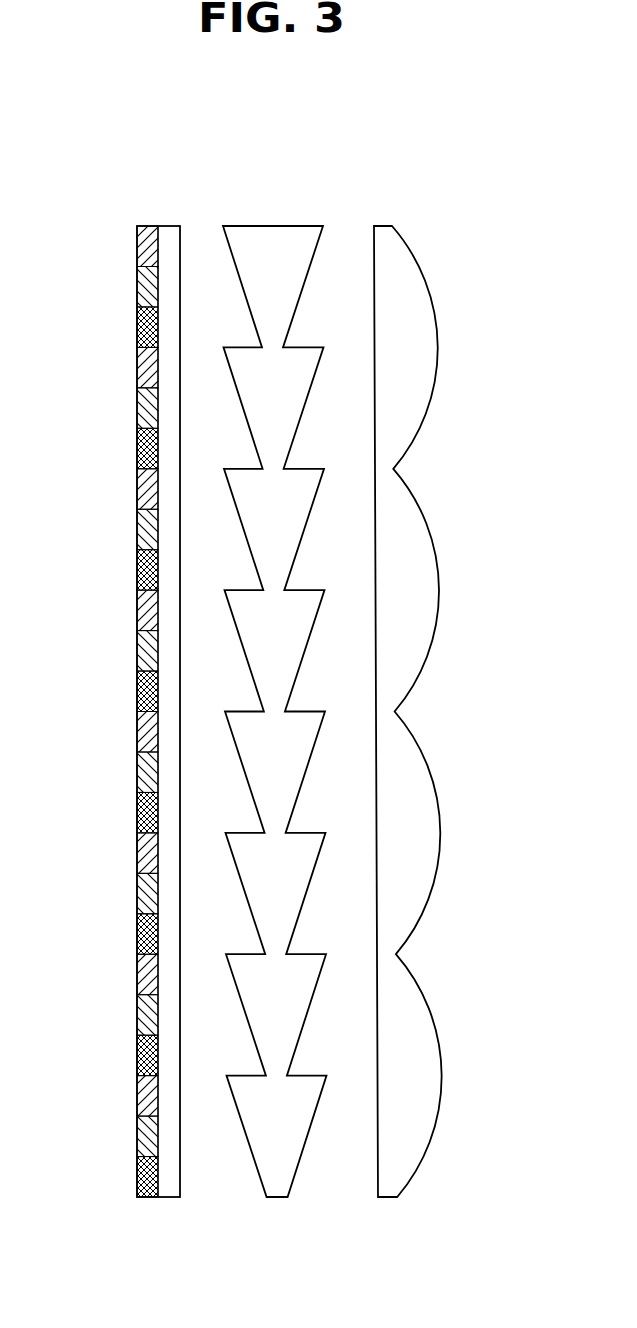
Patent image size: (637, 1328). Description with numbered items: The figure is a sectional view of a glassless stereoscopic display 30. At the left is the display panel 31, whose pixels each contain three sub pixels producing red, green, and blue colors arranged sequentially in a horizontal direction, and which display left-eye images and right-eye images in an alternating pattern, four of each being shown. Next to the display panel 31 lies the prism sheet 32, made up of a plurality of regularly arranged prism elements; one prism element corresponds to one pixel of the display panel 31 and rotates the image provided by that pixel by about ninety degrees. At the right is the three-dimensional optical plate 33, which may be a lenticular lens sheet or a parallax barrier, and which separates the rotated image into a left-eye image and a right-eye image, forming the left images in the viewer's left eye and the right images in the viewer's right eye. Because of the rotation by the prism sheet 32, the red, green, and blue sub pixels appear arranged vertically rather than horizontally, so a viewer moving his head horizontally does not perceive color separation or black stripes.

The glassless stereoscopic display 30 is at (298, 1268).
The display panel 31 is at (149, 228).
The prism sheet 32 is at (273, 232).
The 3D optical plate 33 is at (385, 232).